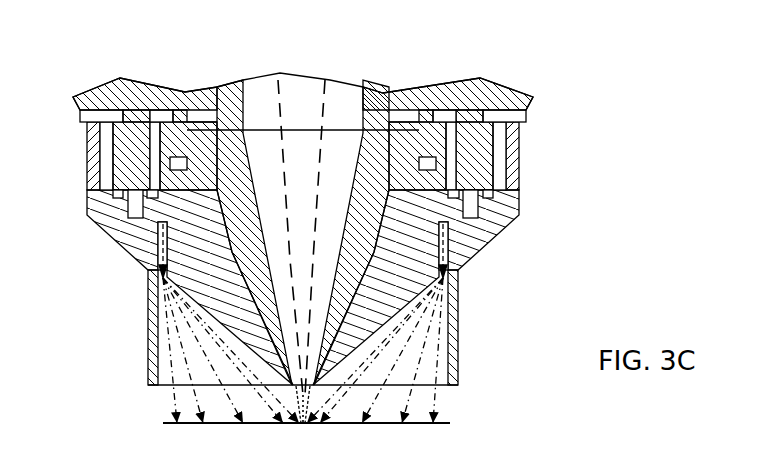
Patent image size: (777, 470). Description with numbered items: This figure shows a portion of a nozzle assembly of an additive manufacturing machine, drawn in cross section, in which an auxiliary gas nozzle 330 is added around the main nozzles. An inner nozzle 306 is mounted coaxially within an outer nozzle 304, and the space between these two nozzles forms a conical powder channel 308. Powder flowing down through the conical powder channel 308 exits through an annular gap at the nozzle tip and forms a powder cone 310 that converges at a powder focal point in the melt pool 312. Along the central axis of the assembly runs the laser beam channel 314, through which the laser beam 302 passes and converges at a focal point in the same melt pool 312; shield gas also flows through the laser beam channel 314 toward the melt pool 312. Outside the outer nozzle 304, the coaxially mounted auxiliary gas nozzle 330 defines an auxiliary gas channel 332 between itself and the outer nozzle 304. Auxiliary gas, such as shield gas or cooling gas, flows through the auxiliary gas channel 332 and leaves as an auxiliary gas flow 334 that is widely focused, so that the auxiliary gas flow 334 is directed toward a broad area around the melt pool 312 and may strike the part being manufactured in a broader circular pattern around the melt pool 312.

The laser beam 302 is at (327, 105).
The outer nozzle 304 is at (208, 295).
The inner nozzle 306 is at (267, 313).
The conical powder channel 308 is at (272, 355).
The powder cone 310 is at (296, 424).
The melt pool 312 is at (304, 425).
The laser beam channel 314 is at (262, 97).
The auxiliary gas nozzle 330 is at (132, 260).
The auxiliary gas channel 332 is at (433, 350).
The auxiliary gas flow 334 is at (435, 402).